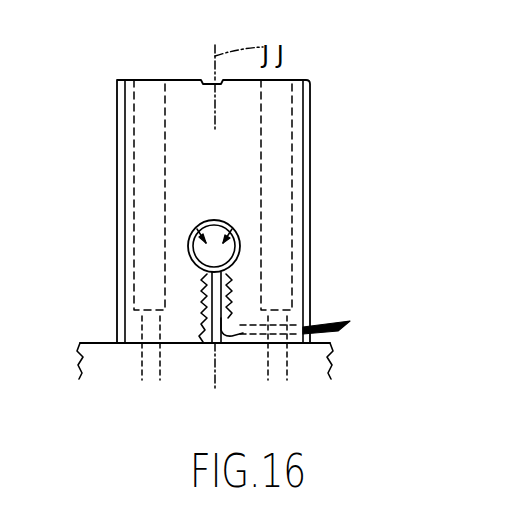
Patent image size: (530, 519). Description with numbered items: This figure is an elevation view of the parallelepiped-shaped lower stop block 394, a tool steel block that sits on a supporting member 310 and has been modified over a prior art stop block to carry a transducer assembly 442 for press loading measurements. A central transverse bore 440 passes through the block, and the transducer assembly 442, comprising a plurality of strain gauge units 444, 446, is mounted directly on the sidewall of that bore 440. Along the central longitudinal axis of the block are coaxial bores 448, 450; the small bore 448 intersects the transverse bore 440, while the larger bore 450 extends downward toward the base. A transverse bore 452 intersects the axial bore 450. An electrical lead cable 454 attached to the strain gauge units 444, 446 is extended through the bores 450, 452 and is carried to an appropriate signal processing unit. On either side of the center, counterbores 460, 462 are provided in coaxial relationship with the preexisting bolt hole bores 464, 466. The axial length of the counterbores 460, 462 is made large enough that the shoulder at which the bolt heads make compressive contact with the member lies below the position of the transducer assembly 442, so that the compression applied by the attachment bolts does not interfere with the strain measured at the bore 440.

The base 310 is at (79, 365).
The lower stop block 394 is at (318, 92).
The central transverse bore 440 is at (222, 252).
The transducer assembly 442 is at (205, 220).
The strain gauge unit 444 is at (191, 257).
The strain gauge unit 446 is at (240, 237).
The coaxial bore 448 is at (217, 292).
The coaxial bore 450 is at (221, 343).
The transverse bore 452 is at (237, 343).
The electrical lead cable 454 is at (345, 326).
The counterbore 460 is at (148, 133).
The counterbore 462 is at (283, 120).
The bolt hole bore 464 is at (147, 327).
The bolt hole bore 466 is at (287, 343).